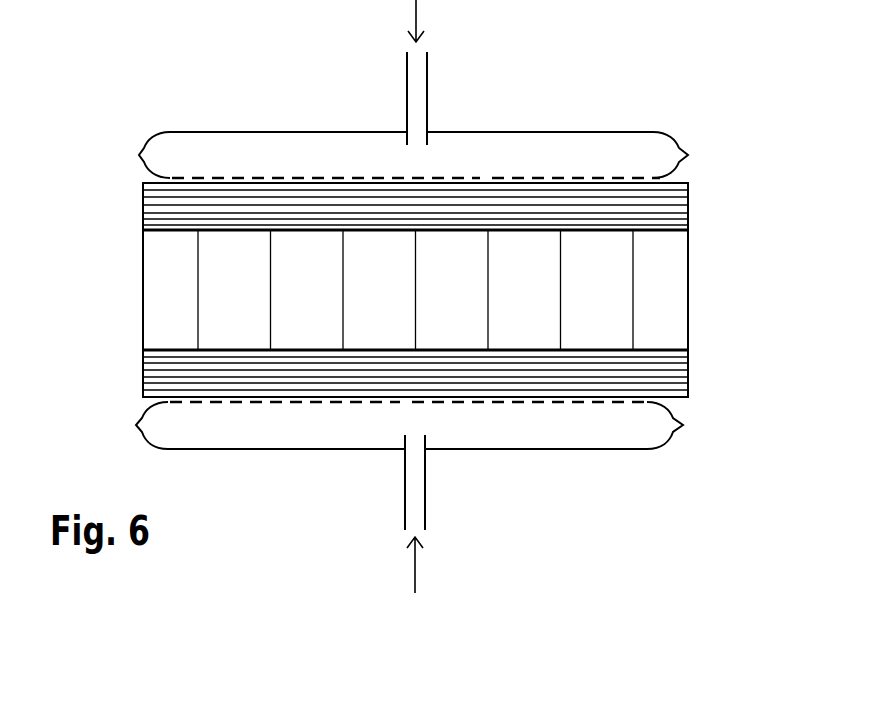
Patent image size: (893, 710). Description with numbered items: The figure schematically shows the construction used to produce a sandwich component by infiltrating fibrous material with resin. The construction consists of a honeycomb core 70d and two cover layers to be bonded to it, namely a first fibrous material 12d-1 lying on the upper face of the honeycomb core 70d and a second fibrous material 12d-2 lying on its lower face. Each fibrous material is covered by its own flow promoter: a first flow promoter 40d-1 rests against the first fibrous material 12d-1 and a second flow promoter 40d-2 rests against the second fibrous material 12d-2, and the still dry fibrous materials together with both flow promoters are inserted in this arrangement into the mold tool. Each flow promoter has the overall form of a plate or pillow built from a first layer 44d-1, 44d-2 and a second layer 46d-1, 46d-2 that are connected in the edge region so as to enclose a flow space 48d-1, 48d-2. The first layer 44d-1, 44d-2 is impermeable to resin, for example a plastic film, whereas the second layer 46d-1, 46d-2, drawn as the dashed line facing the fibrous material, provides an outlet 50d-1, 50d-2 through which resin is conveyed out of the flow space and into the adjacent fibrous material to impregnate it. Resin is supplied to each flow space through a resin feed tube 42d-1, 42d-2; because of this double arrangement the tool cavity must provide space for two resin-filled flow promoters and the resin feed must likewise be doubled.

The first fibrous material 12d-1 is at (670, 202).
The second fibrous material 12d-2 is at (678, 372).
The honeycomb core 70d is at (674, 298).
The first flow promoter 40d-1 is at (413, 117).
The second flow promoter 40d-2 is at (431, 460).
The upper vacuum port 42d-1 is at (427, 73).
The lower vacuum port 42d-2 is at (425, 503).
The first layer 44d-1 is at (562, 133).
The first layer 44d-2 is at (648, 450).
The second layer 46d-1 is at (598, 180).
The second layer 46d-2 is at (570, 403).
The flow space 48d-1 is at (331, 140).
The flow space 48d-2 is at (367, 437).
The outlet 50d-1 is at (485, 169).
The outlet 50d-2 is at (198, 415).